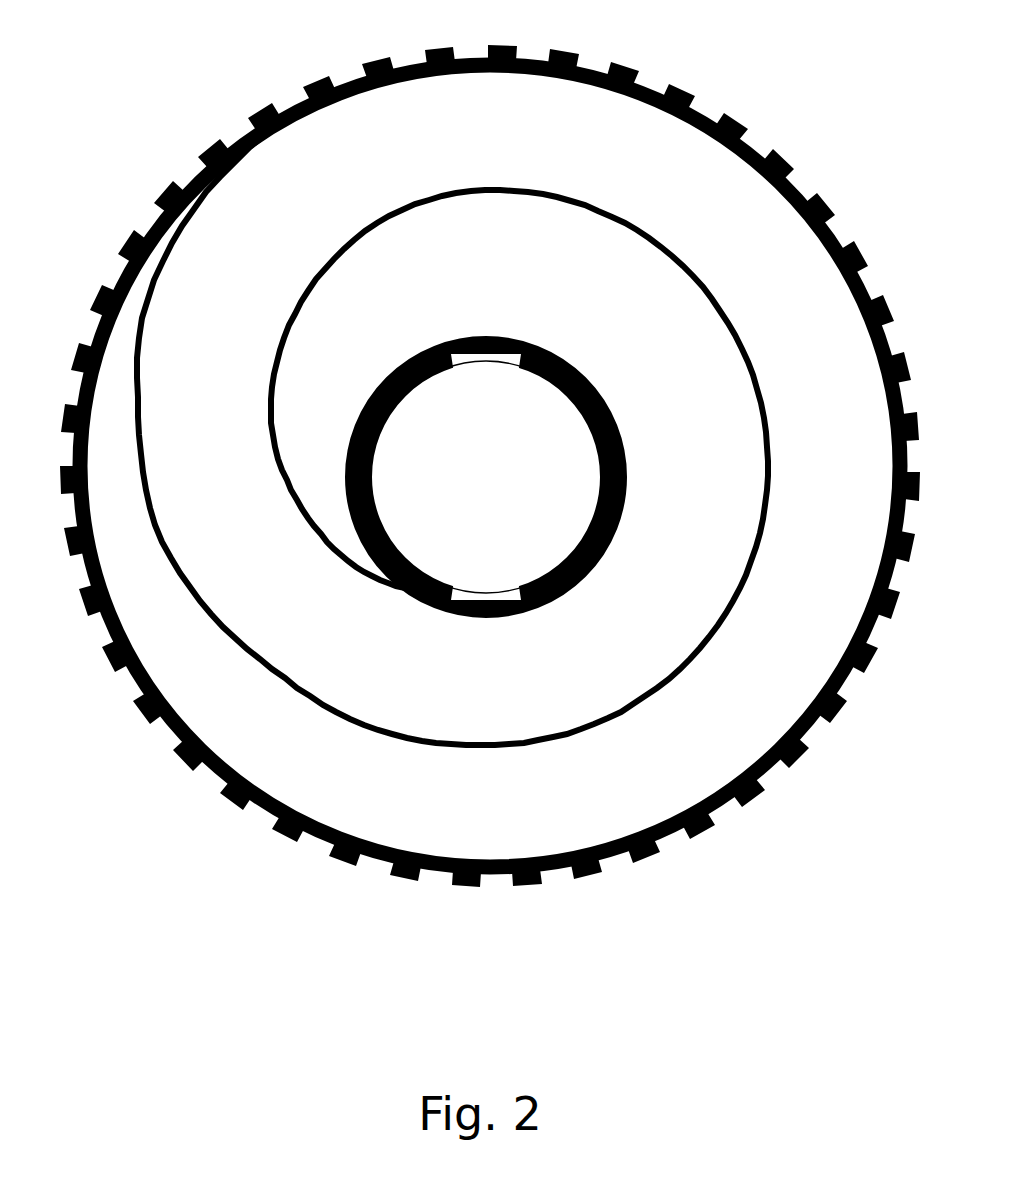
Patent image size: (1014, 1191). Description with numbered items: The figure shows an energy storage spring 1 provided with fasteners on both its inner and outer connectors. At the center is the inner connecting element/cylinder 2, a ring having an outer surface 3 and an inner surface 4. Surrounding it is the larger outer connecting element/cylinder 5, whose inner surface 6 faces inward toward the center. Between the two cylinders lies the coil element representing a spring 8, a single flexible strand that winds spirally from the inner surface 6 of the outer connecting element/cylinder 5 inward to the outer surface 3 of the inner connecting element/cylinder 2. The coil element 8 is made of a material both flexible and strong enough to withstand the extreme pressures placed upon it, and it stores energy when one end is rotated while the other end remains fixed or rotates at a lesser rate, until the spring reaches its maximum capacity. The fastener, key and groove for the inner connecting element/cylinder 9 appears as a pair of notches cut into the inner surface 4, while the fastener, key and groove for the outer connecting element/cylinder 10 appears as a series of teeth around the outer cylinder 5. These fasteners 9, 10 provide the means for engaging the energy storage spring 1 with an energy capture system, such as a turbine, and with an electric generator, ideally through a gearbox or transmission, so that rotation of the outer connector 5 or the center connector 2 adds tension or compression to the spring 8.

The energy storage spring 1 is at (163, 160).
The inner connecting element/cylinder 2 is at (515, 335).
The outer surface of inner connecting element/cylinder 3 is at (377, 387).
The inner surface of inner connecting element/cylinder 4 is at (393, 403).
The outer connecting element/cylinder 5 is at (498, 882).
The inner surface of outer connecting element/cylinder 6 is at (695, 810).
The coil element representing a spring 8 is at (478, 740).
The fastener, key and groove for inner connecting element/cylinder 9 is at (483, 353).
The fastener, key and groove for outer connecting element/cylinder 10 is at (710, 827).